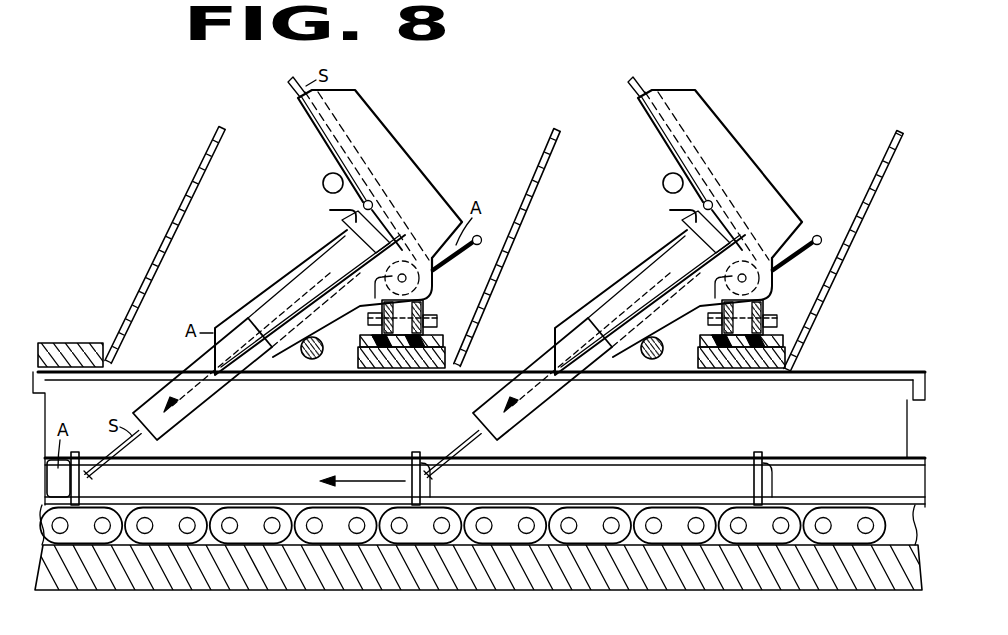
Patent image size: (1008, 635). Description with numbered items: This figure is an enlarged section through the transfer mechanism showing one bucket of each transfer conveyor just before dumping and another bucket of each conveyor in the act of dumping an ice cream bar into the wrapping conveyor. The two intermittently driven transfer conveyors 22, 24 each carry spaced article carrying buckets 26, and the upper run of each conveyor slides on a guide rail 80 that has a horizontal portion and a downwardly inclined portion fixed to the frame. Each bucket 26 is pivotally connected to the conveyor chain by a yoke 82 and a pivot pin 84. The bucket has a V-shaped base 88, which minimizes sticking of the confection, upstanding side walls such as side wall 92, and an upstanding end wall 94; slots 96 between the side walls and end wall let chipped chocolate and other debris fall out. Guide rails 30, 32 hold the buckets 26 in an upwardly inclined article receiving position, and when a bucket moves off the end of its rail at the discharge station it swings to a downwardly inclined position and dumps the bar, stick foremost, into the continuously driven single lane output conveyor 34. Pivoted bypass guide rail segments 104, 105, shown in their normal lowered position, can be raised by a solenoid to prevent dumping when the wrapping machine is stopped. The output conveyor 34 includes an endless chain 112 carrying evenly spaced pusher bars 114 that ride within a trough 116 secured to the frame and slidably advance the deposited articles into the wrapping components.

The transfer conveyor 22 is at (768, 309).
The transfer conveyor 24 is at (428, 313).
The article carrying bucket 26 is at (397, 140).
The guide rail 30 is at (664, 179).
The guide rail 32 is at (323, 181).
The output or wrapping conveyor 34 is at (683, 538).
The guide rail 80 is at (400, 368).
The yoke 82 is at (357, 297).
The pivot pin 84 is at (398, 276).
The V-shaped base 88 is at (317, 139).
The side wall 92 is at (413, 174).
The end wall 94 is at (462, 262).
The slot 96 is at (340, 211).
The bypass guide rail segment 104 is at (312, 360).
The bypass guide rail segment 105 is at (652, 360).
The endless chain 112 is at (590, 516).
The pusher bar 114 is at (416, 452).
The trough 116 is at (213, 470).